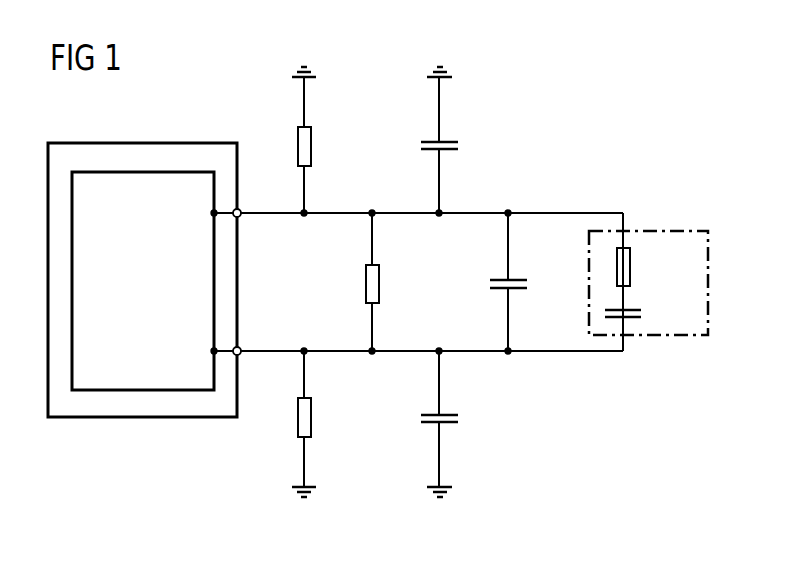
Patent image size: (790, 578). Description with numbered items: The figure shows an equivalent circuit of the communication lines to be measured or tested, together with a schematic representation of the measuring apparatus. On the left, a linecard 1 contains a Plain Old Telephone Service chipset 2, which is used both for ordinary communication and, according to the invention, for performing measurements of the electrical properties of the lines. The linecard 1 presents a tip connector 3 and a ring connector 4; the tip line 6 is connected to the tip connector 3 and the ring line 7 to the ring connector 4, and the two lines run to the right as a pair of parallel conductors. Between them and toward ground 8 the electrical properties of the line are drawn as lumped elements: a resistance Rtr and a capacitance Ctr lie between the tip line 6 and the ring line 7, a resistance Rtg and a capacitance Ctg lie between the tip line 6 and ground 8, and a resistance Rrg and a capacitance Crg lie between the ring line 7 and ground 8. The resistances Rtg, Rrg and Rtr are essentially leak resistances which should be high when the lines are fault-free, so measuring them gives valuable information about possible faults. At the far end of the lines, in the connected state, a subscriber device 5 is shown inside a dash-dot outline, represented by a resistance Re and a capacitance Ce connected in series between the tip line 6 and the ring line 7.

The linecard 1 is at (142, 418).
The POTS chipset 2 is at (142, 172).
The tip connector 3 is at (240, 209).
The ring connector 4 is at (240, 347).
The subscriber device 5 is at (660, 231).
The tip line 6 is at (565, 213).
The ring line 7 is at (568, 352).
The ground 8 is at (316, 77).
The resistance between tip line and ground Rtg is at (311, 146).
The capacitance between tip line and ground Ctg is at (458, 148).
The resistance between tip line and ring line Rtr is at (365, 285).
The capacitance between tip line and ring line Ctr is at (489, 283).
The resistance between ring line and ground Rrg is at (311, 418).
The capacitance between ring line and ground Crg is at (458, 418).
The resistance of subscriber device Re is at (630, 268).
The capacitance of subscriber device Ce is at (641, 314).